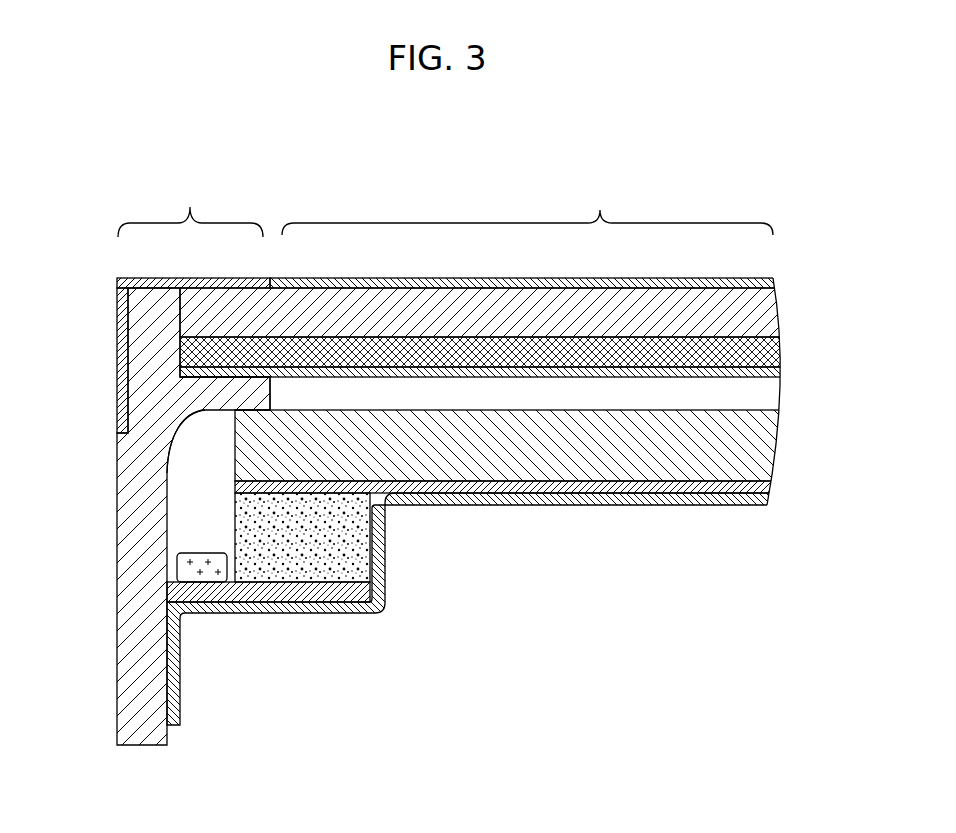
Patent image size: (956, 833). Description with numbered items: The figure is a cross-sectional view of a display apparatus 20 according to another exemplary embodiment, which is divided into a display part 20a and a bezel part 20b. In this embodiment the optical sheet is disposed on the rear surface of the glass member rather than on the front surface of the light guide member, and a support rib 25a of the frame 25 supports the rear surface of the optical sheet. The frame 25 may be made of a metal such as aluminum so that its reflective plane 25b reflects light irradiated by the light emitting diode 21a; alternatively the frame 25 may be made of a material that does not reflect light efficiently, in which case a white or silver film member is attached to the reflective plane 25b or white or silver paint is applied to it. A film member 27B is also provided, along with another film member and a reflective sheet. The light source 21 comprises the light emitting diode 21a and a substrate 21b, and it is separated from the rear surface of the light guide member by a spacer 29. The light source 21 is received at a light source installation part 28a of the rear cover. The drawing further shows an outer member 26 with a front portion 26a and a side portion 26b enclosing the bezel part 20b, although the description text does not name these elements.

The display apparatus 20 is at (421, 139).
The display part 20a is at (527, 206).
The bezel part 20b is at (190, 207).
The light source 21 is at (63, 565).
The light emitting diode 21a is at (185, 569).
The substrate 21b is at (180, 595).
The frame 25 is at (106, 492).
The support rib 25a is at (262, 395).
The reflective plane 25b is at (197, 437).
The top chassis 26 is at (63, 245).
The top chassis front portion 26a is at (165, 278).
The top chassis side portion 26b is at (123, 325).
The film member 27B is at (510, 277).
The light source installation part 28a is at (325, 606).
The spacer 29 is at (250, 527).